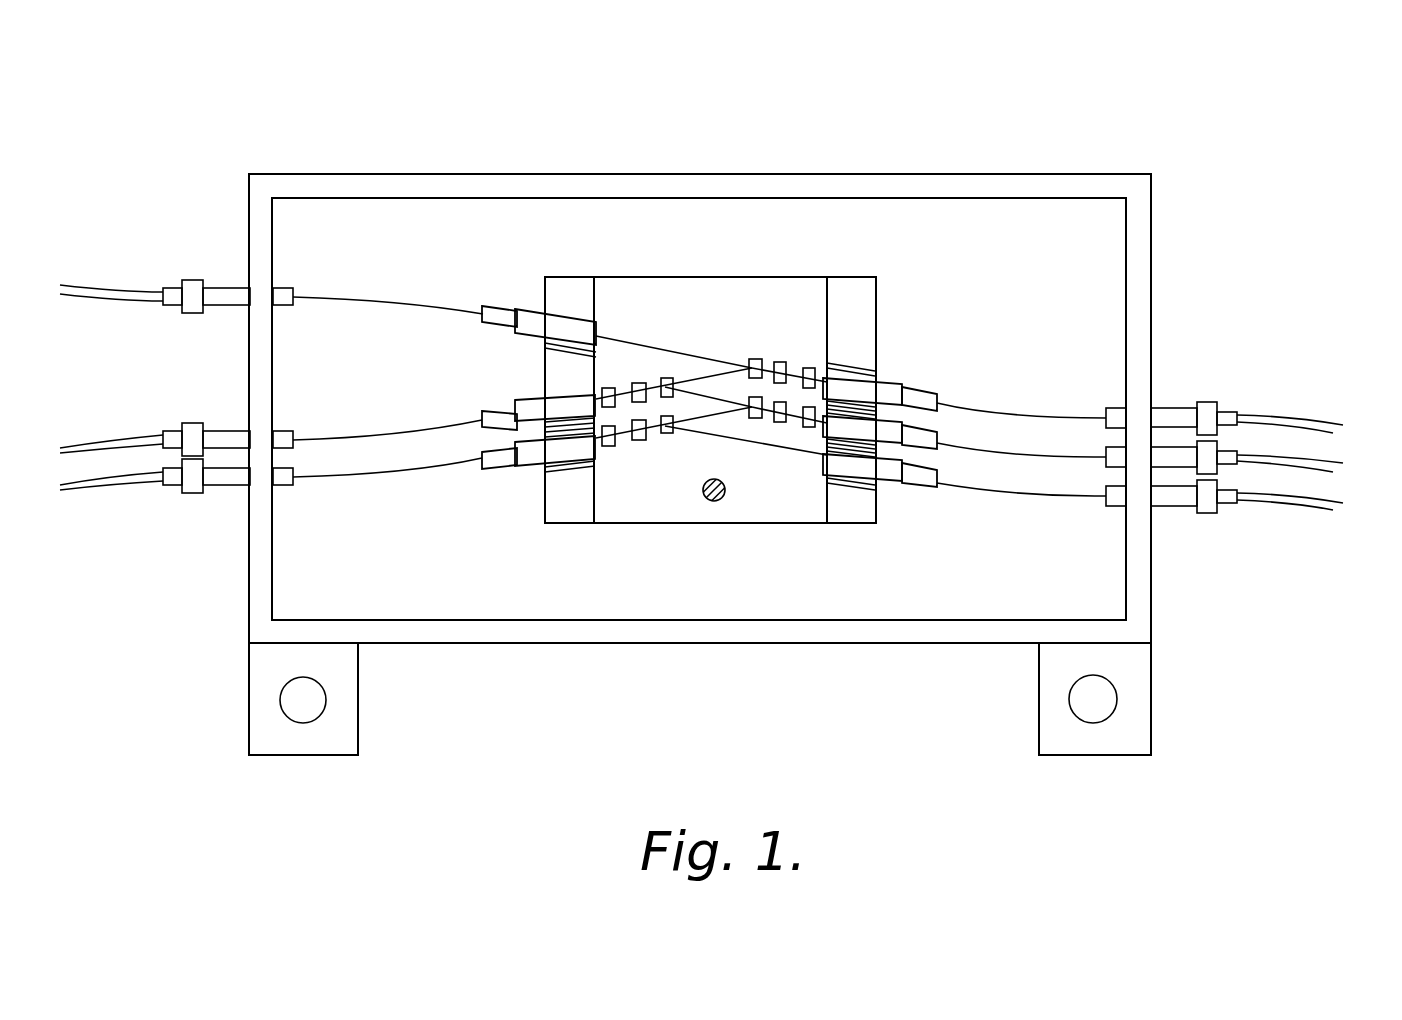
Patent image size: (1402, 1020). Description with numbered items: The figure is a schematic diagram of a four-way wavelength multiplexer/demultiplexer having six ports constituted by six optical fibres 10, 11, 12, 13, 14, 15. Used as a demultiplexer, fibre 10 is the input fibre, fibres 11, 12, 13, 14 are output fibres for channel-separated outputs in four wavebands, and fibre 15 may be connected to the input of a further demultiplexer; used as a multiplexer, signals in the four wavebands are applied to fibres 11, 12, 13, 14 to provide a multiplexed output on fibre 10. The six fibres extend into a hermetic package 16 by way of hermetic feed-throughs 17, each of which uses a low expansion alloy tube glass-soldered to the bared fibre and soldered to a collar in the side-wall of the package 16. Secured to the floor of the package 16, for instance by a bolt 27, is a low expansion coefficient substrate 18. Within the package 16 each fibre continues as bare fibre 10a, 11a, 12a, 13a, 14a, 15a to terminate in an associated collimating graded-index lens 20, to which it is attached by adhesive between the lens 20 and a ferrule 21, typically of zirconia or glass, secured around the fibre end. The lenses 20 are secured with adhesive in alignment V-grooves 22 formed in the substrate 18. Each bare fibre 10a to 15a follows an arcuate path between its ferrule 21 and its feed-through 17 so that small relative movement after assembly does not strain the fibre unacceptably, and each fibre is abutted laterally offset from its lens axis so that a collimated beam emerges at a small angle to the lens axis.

The optical fibre 10 is at (108, 293).
The bare fibre 10a is at (350, 298).
The optical fibre 11 is at (1270, 418).
The bare fibre 11a is at (1013, 415).
The optical fibre 12 is at (95, 440).
The bare fibre 12a is at (408, 433).
The optical fibre 13 is at (1294, 460).
The bare fibre 13a is at (1033, 456).
The optical fibre 14 is at (122, 478).
The bare fibre 14a is at (370, 475).
The optical fibre 15 is at (1308, 502).
The bare fibre 15a is at (1048, 495).
The hermetic package 16 is at (688, 646).
The hermetic feed-through 17 is at (228, 295).
The low expansion coefficient substrate 18 is at (697, 277).
The collimating graded-index lens 20 is at (530, 450).
The ferrule 21 is at (491, 462).
The alignment V-groove 22 is at (586, 355).
The bolt 27 is at (718, 500).